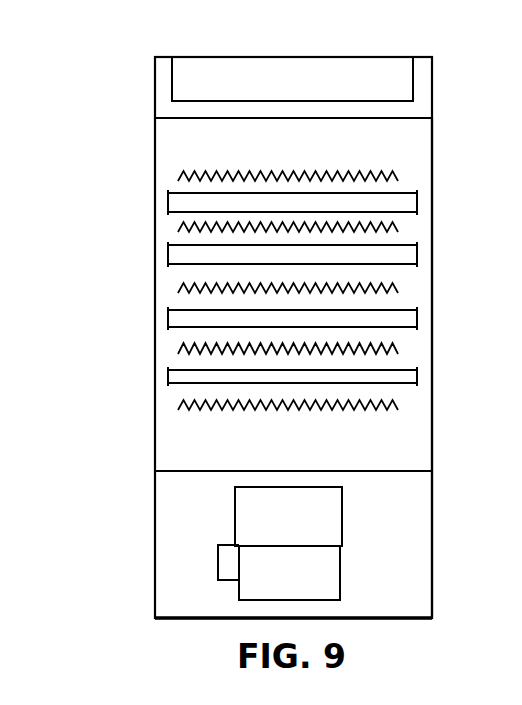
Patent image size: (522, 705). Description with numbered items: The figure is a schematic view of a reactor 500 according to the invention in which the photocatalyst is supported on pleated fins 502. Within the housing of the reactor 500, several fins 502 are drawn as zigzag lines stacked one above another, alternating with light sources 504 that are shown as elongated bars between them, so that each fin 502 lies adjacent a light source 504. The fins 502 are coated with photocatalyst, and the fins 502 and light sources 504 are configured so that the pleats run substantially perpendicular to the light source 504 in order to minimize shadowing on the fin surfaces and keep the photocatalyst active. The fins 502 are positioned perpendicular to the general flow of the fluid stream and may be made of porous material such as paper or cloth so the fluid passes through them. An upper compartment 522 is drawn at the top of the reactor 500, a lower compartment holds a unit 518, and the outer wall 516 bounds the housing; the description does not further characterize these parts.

The reactor 500 is at (110, 83).
The top chamber 522 is at (388, 59).
The pleated fins 502 is at (357, 176).
The light source 504 is at (176, 258).
The housing wall 516 is at (433, 442).
The control unit 518 is at (240, 509).